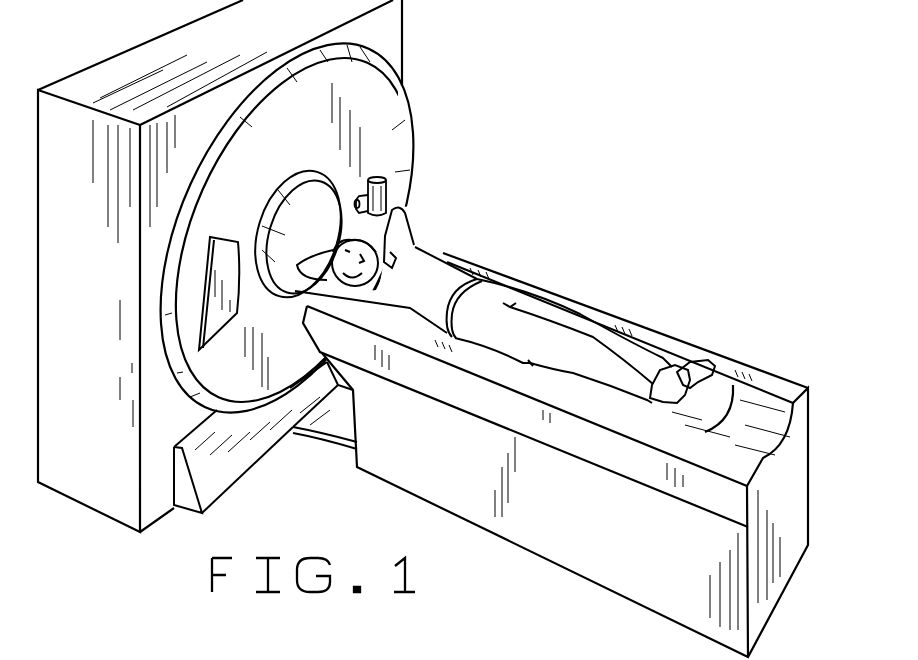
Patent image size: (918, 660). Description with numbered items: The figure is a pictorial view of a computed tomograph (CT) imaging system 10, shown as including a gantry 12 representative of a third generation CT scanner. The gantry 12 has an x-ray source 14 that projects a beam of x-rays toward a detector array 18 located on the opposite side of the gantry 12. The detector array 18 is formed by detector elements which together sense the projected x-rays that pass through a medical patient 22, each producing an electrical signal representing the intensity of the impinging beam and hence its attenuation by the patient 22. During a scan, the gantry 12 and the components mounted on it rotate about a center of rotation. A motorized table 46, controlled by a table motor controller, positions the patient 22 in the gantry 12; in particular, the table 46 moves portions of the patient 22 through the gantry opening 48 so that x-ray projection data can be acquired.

The computed tomograph (CT) imaging system 10 is at (330, 456).
The gantry 12 is at (68, 133).
The x-ray source 14 is at (389, 198).
The detector array 18 is at (213, 313).
The medical patient 22 is at (428, 278).
The motorized table 46 is at (437, 468).
The gantry opening 48 is at (310, 207).